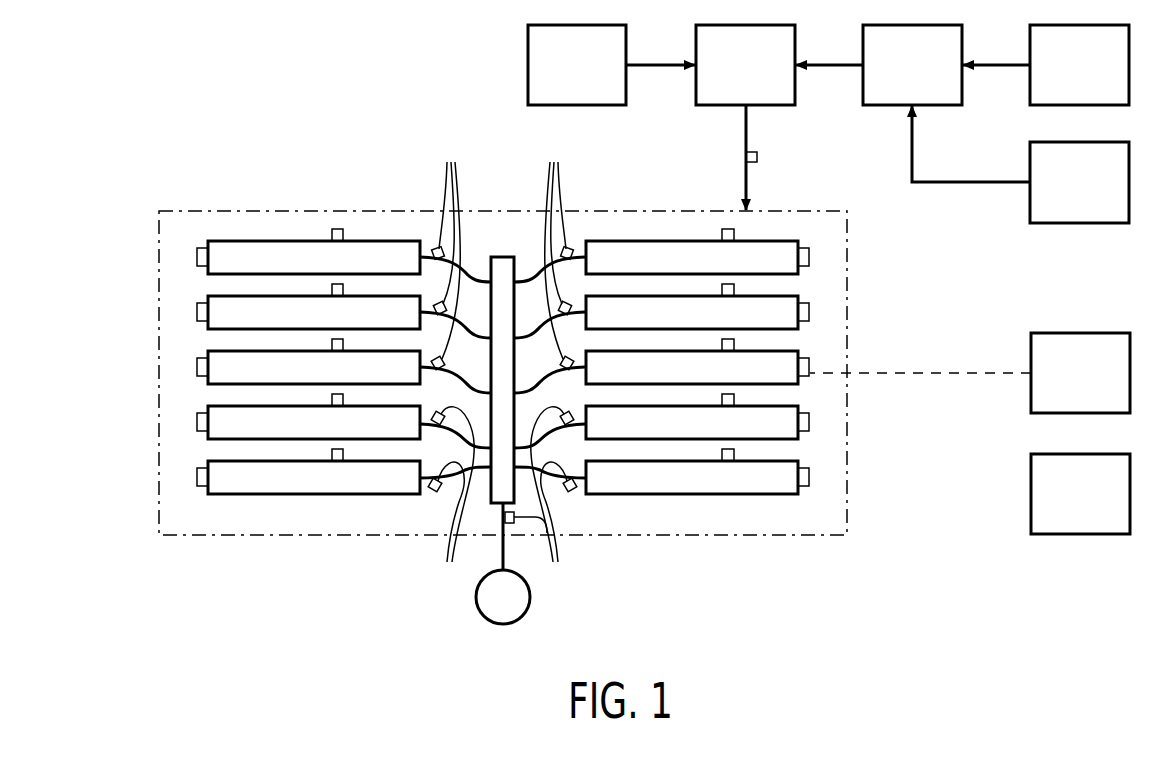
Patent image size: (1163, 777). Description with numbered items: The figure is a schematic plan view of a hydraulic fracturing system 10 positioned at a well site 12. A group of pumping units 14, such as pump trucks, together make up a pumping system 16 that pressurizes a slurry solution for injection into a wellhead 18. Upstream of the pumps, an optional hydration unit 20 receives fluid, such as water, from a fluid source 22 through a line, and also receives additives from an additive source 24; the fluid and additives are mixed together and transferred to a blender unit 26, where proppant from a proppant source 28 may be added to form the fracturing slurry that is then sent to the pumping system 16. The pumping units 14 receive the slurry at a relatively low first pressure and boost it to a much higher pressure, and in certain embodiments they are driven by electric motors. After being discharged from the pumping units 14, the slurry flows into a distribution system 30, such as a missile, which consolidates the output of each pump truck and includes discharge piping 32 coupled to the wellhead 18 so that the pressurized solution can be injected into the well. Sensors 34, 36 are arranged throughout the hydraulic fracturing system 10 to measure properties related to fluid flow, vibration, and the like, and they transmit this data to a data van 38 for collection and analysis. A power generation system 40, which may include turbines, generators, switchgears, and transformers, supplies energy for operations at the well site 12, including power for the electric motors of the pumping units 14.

The hydraulic fracturing system 10 is at (128, 86).
The well site 12 is at (193, 647).
The pumping units 14 is at (316, 270).
The pumping system 16 is at (170, 203).
The wellhead 18 is at (517, 609).
The hydration unit 20 is at (927, 79).
The fluid source 22 is at (1094, 79).
The additive source 24 is at (1094, 196).
The blender unit 26 is at (760, 79).
The proppant source 28 is at (592, 79).
The distribution system 30 is at (503, 265).
The discharge piping 32 is at (501, 547).
The sensor 34 is at (913, 486).
The sensor 36 is at (197, 257).
The data van 38 is at (1095, 387).
The power generation system 40 is at (1095, 508).